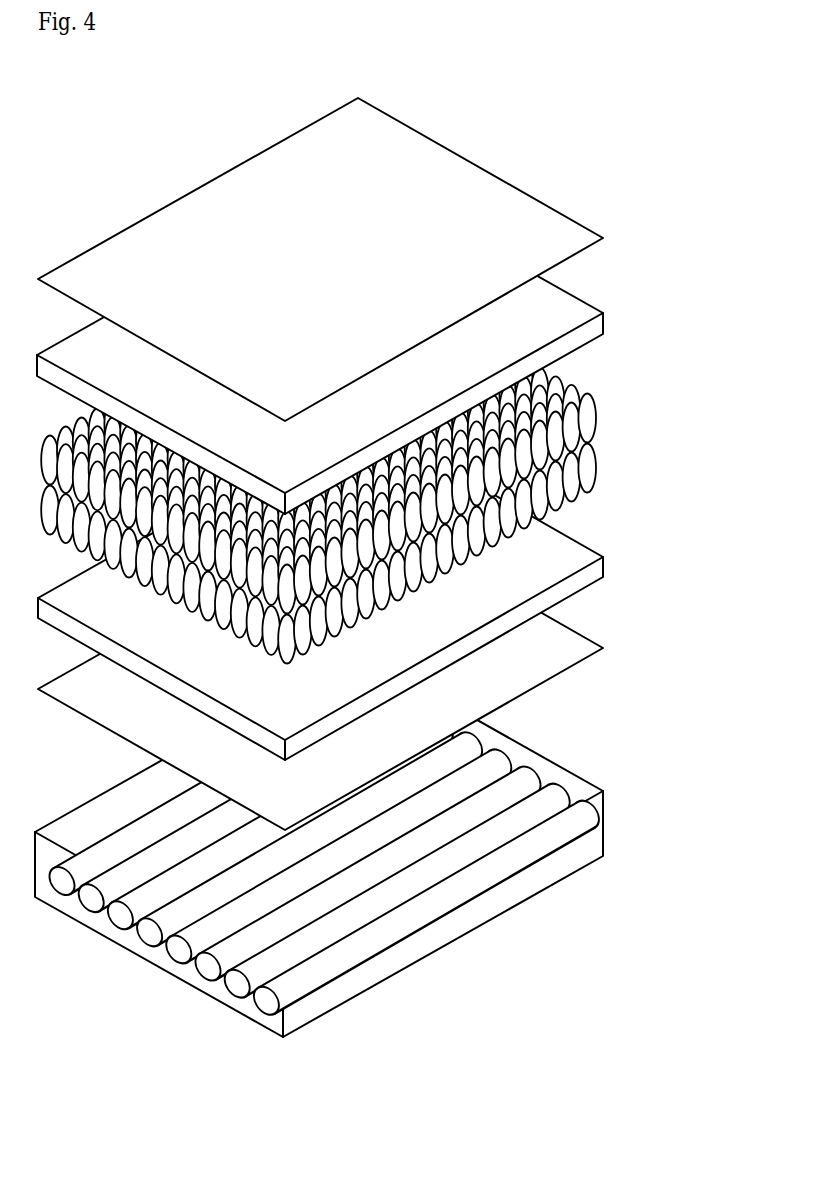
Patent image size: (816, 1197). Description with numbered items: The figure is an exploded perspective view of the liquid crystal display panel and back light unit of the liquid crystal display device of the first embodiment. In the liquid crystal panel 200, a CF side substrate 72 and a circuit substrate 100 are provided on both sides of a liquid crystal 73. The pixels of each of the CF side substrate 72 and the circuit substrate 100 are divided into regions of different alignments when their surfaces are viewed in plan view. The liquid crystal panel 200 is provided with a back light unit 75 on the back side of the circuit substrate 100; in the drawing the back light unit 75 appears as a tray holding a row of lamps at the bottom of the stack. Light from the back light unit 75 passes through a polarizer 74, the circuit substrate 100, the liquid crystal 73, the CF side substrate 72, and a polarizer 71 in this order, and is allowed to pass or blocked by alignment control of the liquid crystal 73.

The liquid crystal panel 200 is at (660, 154).
The polarizer 71 is at (570, 235).
The CF side substrate 72 is at (570, 340).
The liquid crystal 73 is at (572, 437).
The circuit substrate 100 is at (568, 585).
The polarizer 74 is at (568, 645).
The back light unit 75 is at (567, 852).